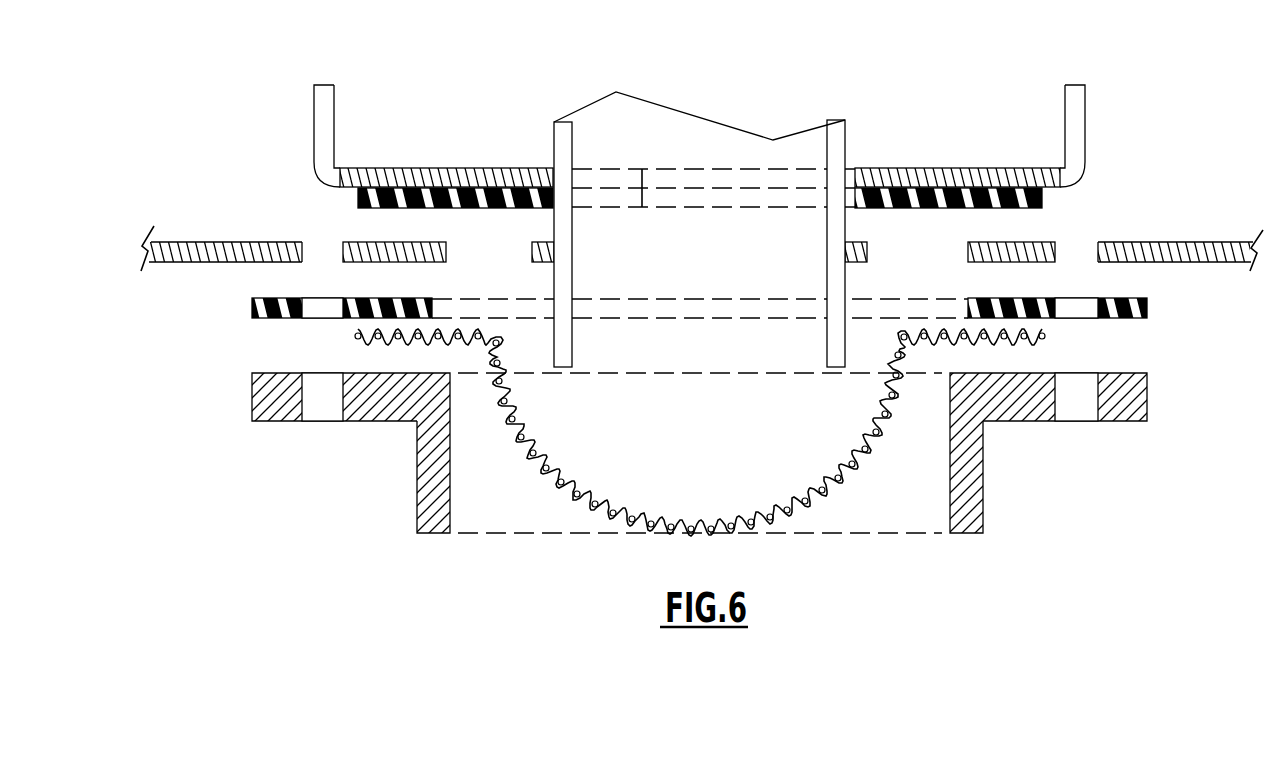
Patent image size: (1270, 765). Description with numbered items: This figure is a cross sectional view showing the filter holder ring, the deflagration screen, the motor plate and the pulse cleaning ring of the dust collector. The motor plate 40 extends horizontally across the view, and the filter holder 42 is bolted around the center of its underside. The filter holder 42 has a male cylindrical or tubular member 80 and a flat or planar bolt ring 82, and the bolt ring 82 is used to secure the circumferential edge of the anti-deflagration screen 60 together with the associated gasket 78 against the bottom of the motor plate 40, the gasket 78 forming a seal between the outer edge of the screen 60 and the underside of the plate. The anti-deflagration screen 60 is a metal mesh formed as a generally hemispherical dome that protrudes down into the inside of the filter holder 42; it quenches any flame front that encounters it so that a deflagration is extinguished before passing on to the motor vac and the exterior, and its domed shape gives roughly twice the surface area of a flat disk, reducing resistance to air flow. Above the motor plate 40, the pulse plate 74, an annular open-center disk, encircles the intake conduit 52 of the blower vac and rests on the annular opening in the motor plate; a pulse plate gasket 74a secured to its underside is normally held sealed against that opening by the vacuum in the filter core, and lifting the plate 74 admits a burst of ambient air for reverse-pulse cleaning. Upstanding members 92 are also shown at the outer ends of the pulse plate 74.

The motor plate 40 is at (198, 242).
The filter holder 42 is at (478, 558).
The intake conduit 52 is at (848, 147).
The anti-deflagration screen 60 is at (856, 476).
The pulse plate 74 is at (412, 168).
The pulse plate gasket 74a is at (464, 207).
The gasket 78 is at (1148, 305).
The male cylindrical or tubular member 80 is at (417, 496).
The bolt ring 82 is at (376, 421).
The bracket 92 is at (333, 96).